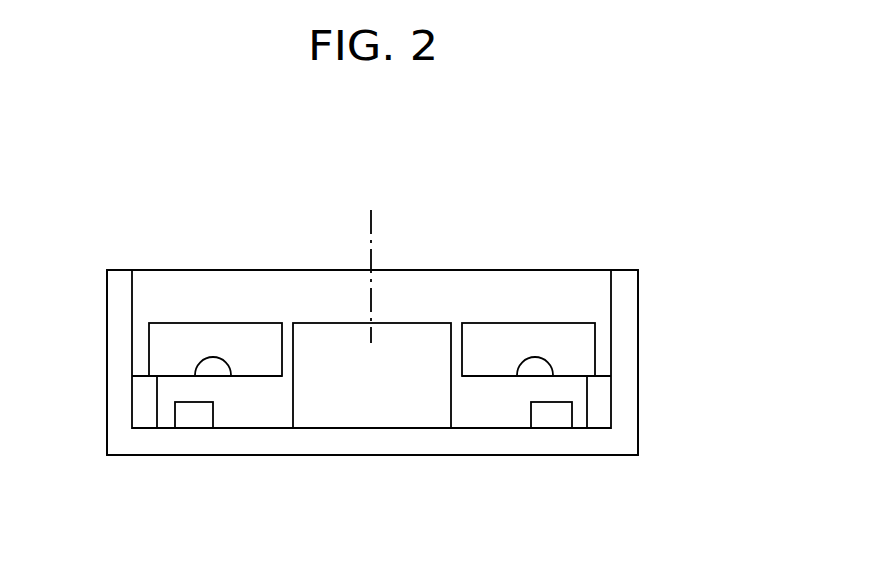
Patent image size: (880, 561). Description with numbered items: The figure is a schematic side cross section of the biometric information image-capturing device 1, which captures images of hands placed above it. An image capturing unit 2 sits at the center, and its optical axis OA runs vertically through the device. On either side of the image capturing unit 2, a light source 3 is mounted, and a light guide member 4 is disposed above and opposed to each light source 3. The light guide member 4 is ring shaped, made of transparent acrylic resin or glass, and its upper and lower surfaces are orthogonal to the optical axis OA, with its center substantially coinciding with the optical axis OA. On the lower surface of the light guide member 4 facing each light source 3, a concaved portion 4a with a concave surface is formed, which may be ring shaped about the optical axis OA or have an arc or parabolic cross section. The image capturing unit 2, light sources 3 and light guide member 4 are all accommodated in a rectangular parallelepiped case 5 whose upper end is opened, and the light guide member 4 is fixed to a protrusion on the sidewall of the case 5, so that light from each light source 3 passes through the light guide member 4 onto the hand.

The biometric information image-capturing device 1 is at (662, 478).
The image capturing unit 2 is at (357, 417).
The light source 3 is at (195, 418).
The light guide member 4 is at (178, 341).
The concaved portion 4a is at (226, 362).
The case 5 is at (638, 303).
The optical axis OA is at (371, 228).